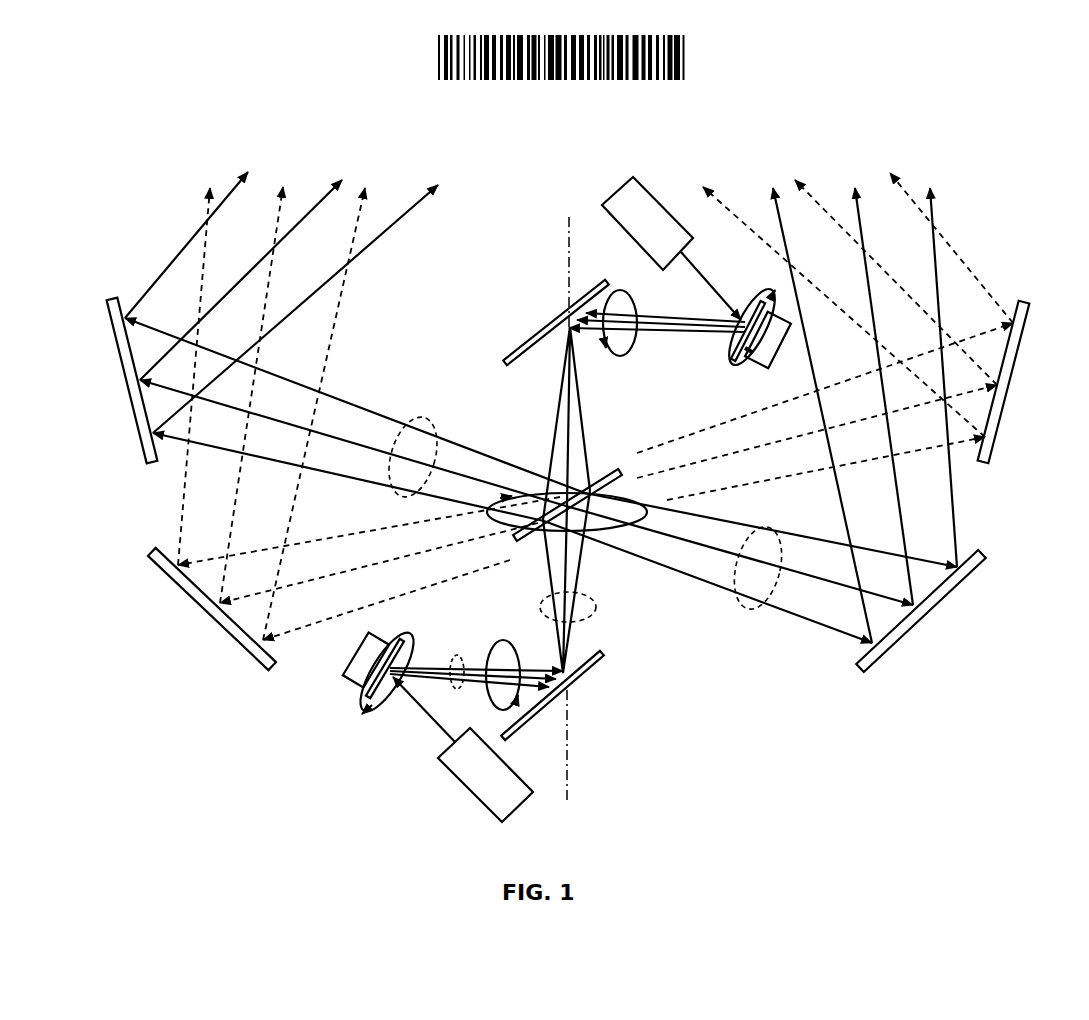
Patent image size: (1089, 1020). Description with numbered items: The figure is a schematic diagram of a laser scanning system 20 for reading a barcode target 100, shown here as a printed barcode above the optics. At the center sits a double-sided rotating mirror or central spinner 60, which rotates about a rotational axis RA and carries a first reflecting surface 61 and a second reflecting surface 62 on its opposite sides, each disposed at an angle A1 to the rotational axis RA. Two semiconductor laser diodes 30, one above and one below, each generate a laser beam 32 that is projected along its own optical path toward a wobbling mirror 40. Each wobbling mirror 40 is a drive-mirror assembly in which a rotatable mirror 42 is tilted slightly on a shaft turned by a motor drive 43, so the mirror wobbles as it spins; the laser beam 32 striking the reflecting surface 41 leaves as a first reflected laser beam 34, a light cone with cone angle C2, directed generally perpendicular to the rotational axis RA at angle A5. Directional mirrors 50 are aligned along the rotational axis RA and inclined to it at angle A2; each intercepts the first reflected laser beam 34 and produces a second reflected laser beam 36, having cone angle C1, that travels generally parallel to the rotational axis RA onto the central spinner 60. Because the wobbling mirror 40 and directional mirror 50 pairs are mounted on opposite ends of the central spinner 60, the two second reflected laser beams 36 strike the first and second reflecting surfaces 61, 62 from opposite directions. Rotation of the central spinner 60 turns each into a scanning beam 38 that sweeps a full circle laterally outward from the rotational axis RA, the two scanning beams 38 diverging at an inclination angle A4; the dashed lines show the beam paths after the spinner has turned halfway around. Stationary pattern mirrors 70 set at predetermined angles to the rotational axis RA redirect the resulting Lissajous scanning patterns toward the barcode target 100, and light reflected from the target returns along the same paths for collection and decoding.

The laser scanning system 20 is at (177, 85).
The barcode target 100 is at (706, 58).
The semiconductor laser diode 30 is at (663, 206).
The laser beam 32 is at (698, 271).
The first reflected laser beam 34 is at (455, 662).
The second reflected laser beam 36 is at (537, 612).
The scanning beam 38 is at (427, 417).
The wobbling mirror 40 is at (750, 280).
The reflecting surface 41 is at (730, 343).
The rotatable mirror 42 is at (737, 367).
The motor drive 43 is at (781, 352).
The directional mirror 50 is at (562, 320).
The central spinner 60 is at (588, 507).
The first reflecting surface 61 is at (602, 465).
The second reflecting surface 62 is at (624, 487).
The pattern mirror 70 is at (128, 380).
The spinner angle A1 is at (563, 570).
The directional mirror angle A2 is at (595, 277).
The inclination angle A4 is at (368, 482).
The beam angle A5 is at (528, 683).
The cone angle C1 is at (623, 385).
The cone angle C2 is at (641, 311).
The rotational axis RA is at (574, 747).